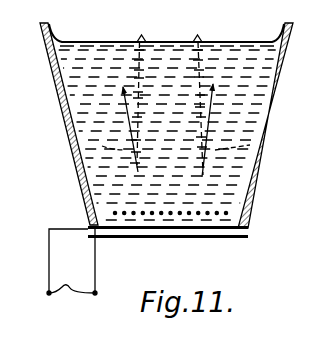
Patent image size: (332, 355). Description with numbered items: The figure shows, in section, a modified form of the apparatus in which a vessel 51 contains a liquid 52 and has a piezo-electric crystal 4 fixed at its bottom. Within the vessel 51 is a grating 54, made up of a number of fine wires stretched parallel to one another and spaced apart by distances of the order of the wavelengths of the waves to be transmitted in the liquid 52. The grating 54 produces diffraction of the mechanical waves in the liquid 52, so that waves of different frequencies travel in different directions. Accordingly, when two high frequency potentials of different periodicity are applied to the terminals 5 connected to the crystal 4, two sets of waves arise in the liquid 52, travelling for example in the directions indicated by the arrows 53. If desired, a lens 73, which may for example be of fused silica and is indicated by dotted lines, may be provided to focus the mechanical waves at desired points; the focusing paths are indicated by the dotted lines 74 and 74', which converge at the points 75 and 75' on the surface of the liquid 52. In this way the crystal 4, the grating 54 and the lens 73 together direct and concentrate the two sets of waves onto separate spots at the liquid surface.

The piezo-electric crystal 4 is at (192, 238).
The terminals 5 is at (72, 261).
The vessel 51 is at (246, 194).
The liquid 52 is at (78, 98).
The arrows 53 is at (166, 82).
The grating 54 is at (224, 214).
The lens 73 is at (252, 147).
The dotted lines 74 is at (220, 101).
The dotted lines 74' is at (119, 97).
The point on the surface of the liquid 75 is at (203, 96).
The point on the surface of the liquid 75' is at (143, 92).